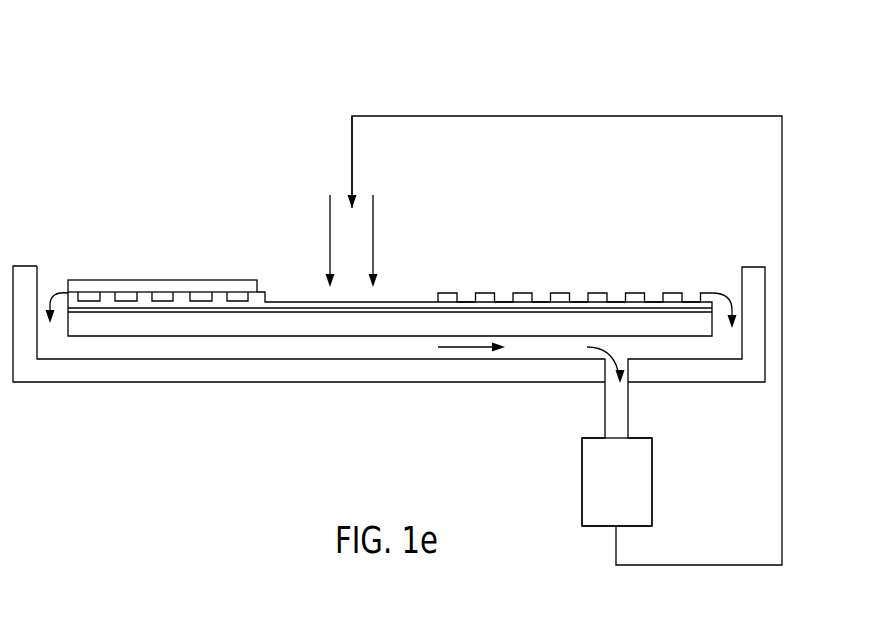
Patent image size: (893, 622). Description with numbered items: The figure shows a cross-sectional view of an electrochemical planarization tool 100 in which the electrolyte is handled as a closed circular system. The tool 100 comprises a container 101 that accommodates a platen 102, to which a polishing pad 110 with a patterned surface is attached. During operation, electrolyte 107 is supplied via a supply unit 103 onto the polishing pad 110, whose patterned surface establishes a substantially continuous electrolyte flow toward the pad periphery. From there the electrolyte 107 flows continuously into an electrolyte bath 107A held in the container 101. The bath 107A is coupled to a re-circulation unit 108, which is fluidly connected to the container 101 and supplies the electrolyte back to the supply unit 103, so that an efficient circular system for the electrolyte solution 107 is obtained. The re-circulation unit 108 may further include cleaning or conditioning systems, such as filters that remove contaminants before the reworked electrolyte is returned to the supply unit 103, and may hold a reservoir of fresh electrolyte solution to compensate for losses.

The electrochemical planarization tool 100 is at (800, 62).
The container 101 is at (765, 333).
The platen 102 is at (65, 332).
The electrolyte supply unit 103 is at (352, 157).
The electrolyte 107 is at (373, 235).
The electrolyte bath 107A is at (357, 353).
The re-circulation unit 108 is at (638, 496).
The polishing pad 110 is at (110, 270).